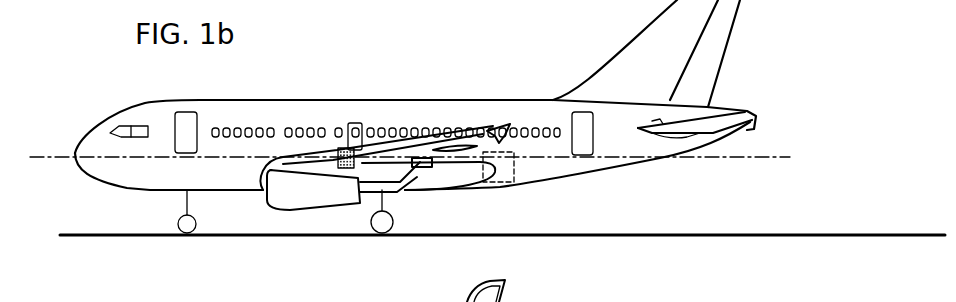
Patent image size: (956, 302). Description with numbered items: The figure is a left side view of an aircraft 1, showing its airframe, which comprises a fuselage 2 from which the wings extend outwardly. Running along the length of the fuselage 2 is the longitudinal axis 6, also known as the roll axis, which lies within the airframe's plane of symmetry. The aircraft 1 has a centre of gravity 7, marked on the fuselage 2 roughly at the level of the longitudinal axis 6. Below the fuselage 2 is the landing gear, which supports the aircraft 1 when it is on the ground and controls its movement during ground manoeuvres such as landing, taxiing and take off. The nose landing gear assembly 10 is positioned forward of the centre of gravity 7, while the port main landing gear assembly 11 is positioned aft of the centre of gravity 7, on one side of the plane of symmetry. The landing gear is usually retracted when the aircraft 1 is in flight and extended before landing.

The aircraft 1 is at (131, 100).
The fuselage 2 is at (500, 100).
The longitudinal axis 6 is at (758, 158).
The centre of gravity 7 is at (340, 148).
The nose landing gear assembly 10 is at (187, 239).
The port main landing gear assembly 11 is at (385, 239).